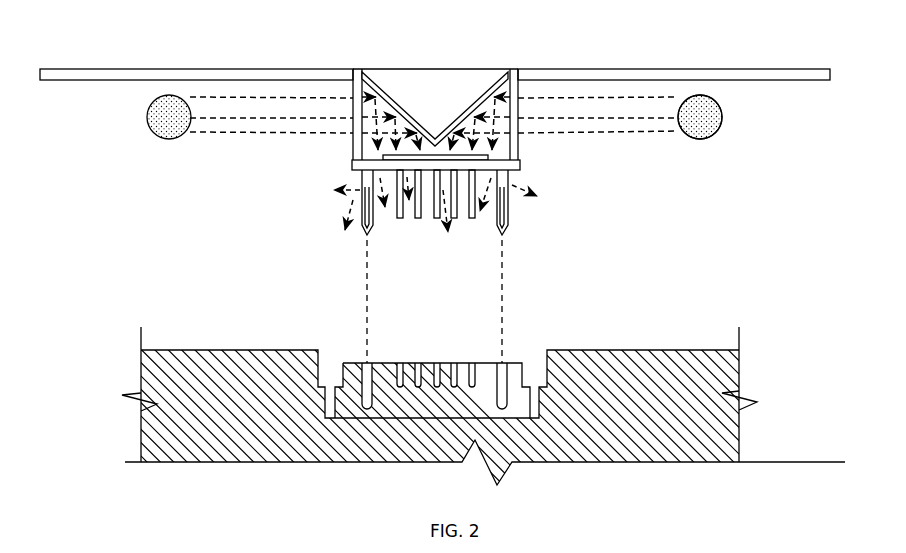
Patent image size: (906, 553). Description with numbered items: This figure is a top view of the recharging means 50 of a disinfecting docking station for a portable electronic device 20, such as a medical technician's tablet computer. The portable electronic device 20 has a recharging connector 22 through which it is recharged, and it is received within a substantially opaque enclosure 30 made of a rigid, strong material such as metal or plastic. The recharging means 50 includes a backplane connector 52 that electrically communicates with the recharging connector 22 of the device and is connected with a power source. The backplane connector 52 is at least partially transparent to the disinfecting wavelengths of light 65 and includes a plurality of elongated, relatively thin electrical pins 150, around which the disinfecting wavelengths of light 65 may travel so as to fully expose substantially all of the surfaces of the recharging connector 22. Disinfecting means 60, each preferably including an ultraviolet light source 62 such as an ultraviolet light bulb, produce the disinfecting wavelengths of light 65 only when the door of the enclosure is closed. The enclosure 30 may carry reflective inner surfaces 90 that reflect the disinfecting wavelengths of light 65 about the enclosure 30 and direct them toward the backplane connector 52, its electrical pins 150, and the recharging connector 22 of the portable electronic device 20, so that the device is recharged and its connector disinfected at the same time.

The portable electronic device 20 is at (292, 350).
The recharging connector 22 is at (418, 363).
The enclosure 30 is at (241, 68).
The recharging means 50 is at (558, 170).
The backplane connector 52 is at (352, 162).
The disinfecting means 60 is at (722, 138).
The ultraviolet light source 62 is at (708, 110).
The disinfecting wavelengths of light 65 is at (588, 134).
The reflective inner surfaces 90 is at (407, 122).
The electrical pins 150 is at (521, 219).